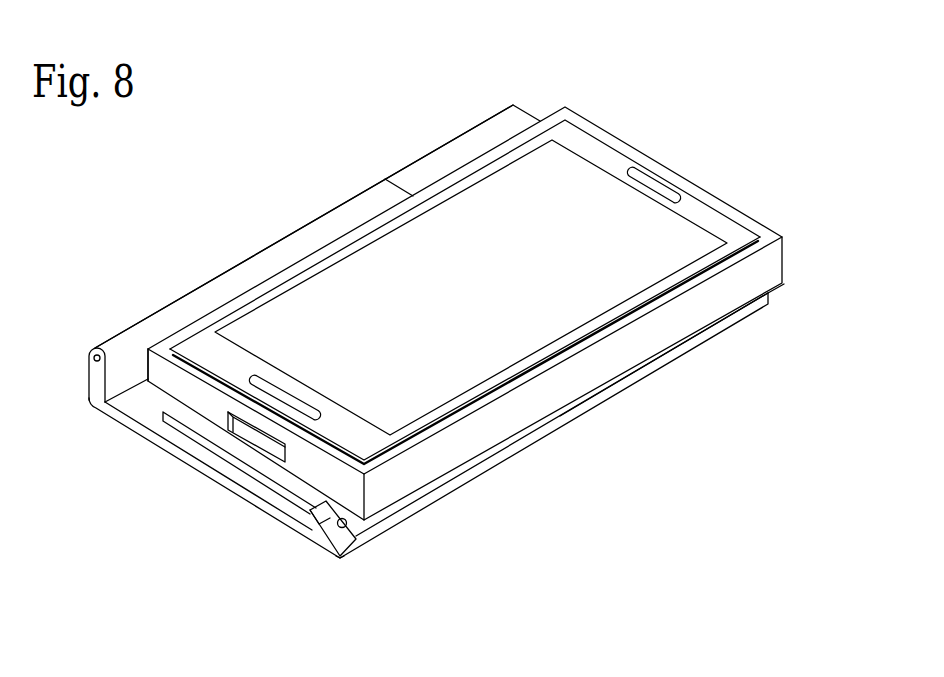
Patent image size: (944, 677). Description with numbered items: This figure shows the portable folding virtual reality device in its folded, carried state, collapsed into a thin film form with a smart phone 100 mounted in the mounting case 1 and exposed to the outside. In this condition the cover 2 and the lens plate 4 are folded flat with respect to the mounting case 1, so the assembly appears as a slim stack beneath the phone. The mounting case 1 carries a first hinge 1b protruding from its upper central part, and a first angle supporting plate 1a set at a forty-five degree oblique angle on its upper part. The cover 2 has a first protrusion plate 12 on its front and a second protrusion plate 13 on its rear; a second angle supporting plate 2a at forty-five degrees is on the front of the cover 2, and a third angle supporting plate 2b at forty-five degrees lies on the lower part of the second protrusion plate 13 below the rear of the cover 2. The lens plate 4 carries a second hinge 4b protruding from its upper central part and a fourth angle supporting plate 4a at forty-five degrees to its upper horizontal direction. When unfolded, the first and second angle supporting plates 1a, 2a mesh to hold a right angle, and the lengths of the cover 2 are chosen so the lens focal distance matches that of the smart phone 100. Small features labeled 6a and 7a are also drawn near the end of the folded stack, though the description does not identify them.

The mounting case 1 is at (490, 433).
The first angle supporting plate 1a is at (142, 373).
The first hinge 1b is at (303, 240).
The cover 2 is at (252, 495).
The second angle supporting plate 2a is at (88, 400).
The third angle supporting plate 2b is at (342, 560).
The lens plate 4 is at (192, 428).
The fourth angle supporting plate 4a is at (313, 513).
The second hinge 4b is at (610, 387).
The hole 6a is at (93, 357).
The pin 7a is at (347, 527).
The first protrusion plate 12 is at (455, 140).
The second protrusion plate 13 is at (343, 533).
The smart phone 100 is at (530, 338).